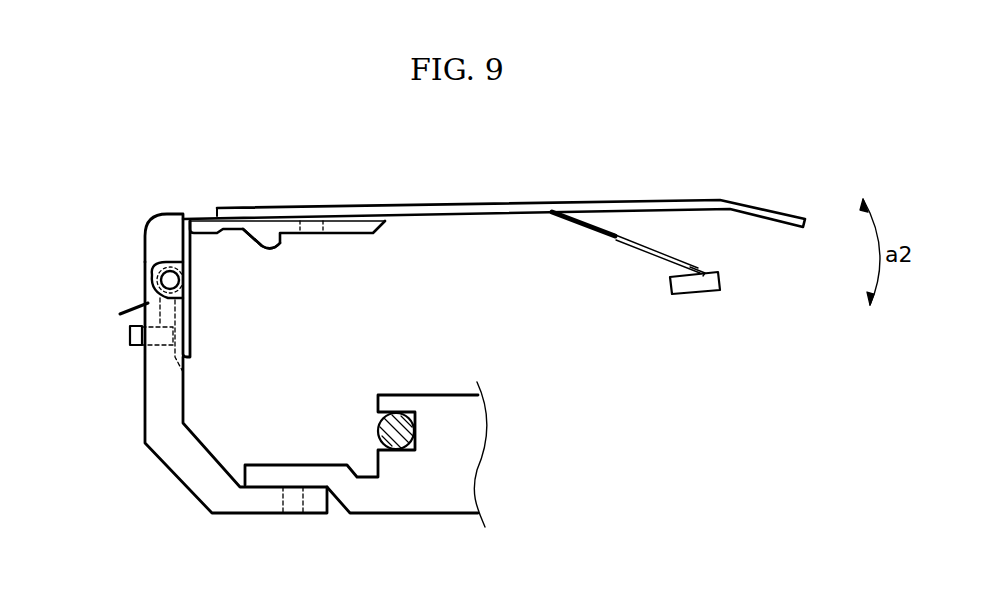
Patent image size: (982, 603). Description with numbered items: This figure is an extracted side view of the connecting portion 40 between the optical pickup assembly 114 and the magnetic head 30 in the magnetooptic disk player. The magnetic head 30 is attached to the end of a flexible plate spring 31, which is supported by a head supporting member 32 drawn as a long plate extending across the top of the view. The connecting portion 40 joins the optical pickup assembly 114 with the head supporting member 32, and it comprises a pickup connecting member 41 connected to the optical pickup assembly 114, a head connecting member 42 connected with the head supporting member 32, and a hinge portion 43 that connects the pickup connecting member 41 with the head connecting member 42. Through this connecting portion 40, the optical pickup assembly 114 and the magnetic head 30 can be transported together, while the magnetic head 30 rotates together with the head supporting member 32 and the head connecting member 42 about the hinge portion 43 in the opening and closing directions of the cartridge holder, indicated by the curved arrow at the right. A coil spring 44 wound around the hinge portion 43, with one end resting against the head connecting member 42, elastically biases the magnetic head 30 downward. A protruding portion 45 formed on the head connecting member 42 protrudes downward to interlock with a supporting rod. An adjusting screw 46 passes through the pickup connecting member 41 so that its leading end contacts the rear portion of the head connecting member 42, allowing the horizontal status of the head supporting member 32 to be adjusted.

The magnetic head 30 is at (722, 283).
The flexible plate spring 31 is at (612, 240).
The head supporting member 32 is at (425, 205).
The connecting portion 40 is at (126, 382).
The pickup connecting member 41 is at (157, 425).
The head connecting member 42 is at (168, 236).
The hinge portion 43 is at (161, 283).
The coil spring 44 is at (152, 267).
The protruding portion 45 is at (257, 240).
The adjusting screw 46 is at (130, 336).
The optical pickup assembly 114 is at (452, 480).